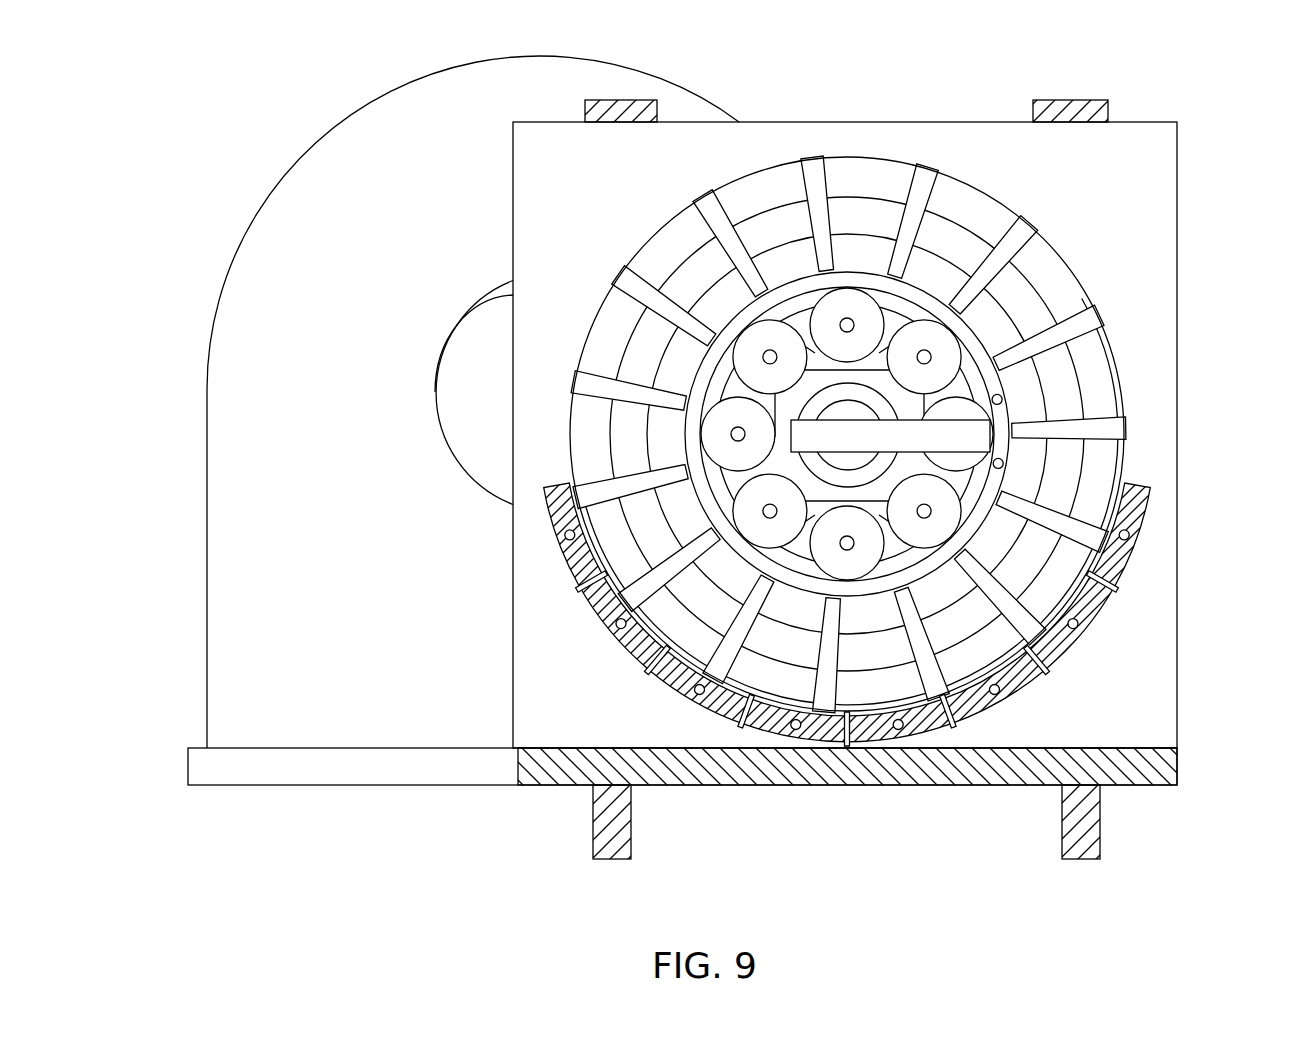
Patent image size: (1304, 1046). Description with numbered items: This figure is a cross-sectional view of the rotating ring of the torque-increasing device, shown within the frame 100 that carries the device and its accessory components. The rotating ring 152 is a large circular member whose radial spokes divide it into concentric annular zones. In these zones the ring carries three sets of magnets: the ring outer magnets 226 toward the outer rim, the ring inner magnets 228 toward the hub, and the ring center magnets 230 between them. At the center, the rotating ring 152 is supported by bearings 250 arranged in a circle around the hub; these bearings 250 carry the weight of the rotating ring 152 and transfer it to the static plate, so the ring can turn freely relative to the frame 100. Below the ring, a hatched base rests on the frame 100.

The base plate 100 is at (810, 770).
The outer rim 152 is at (1020, 237).
The outer ring portion 226 is at (980, 217).
The inner ring portion 228 is at (922, 267).
The intermediate ring portion 230 is at (970, 250).
The roller 250 is at (947, 362).